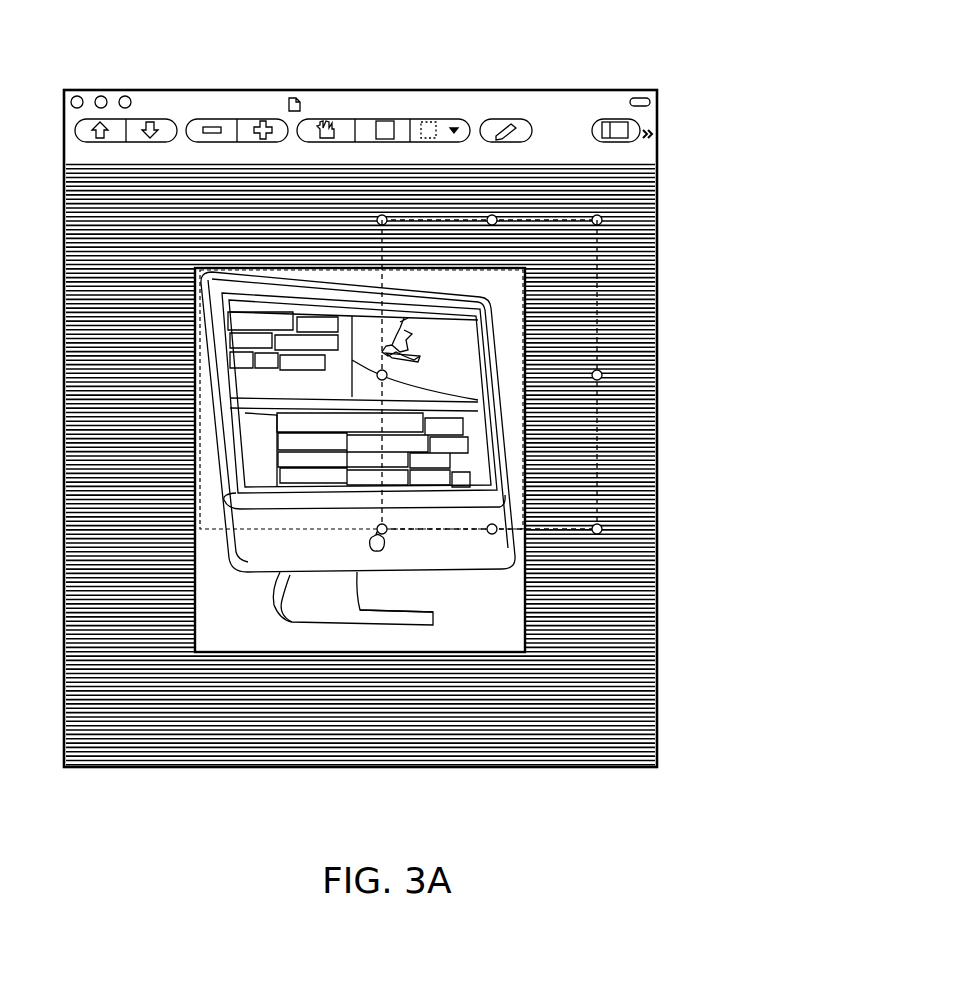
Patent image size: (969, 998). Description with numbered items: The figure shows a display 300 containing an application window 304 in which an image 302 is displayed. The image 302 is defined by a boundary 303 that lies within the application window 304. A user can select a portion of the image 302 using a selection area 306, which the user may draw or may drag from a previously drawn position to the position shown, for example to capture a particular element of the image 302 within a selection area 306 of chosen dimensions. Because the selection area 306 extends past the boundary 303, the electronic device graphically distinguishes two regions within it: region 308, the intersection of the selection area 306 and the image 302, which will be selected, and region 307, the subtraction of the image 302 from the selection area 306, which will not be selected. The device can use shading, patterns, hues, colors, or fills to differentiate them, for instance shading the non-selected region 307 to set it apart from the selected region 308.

The display 300 is at (474, 82).
The image 302 is at (485, 622).
The boundary 303 is at (245, 653).
The application window 304 is at (620, 218).
The selection area 306 is at (595, 478).
The region 307 is at (550, 423).
The region 308 is at (485, 306).